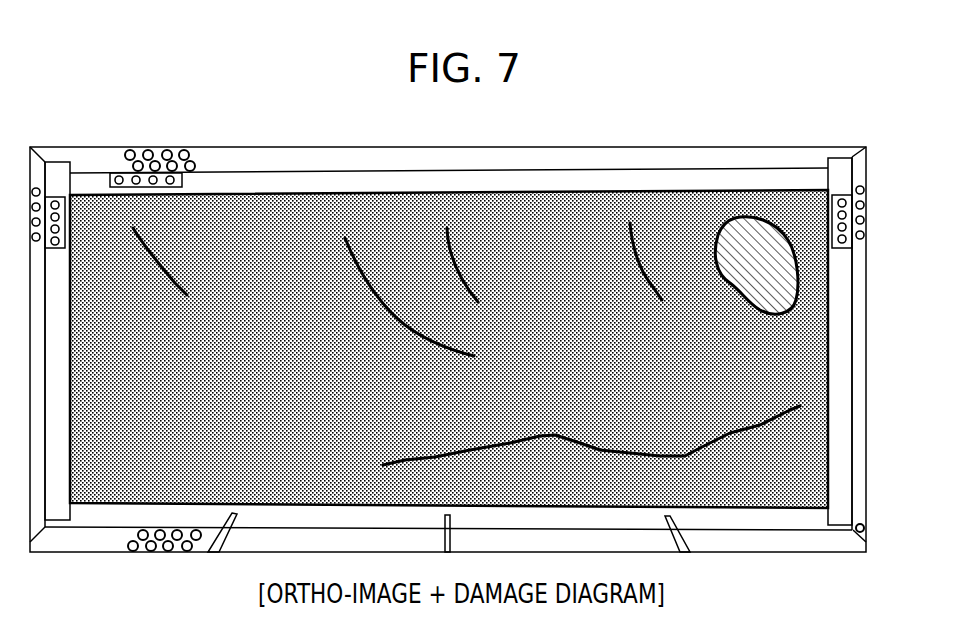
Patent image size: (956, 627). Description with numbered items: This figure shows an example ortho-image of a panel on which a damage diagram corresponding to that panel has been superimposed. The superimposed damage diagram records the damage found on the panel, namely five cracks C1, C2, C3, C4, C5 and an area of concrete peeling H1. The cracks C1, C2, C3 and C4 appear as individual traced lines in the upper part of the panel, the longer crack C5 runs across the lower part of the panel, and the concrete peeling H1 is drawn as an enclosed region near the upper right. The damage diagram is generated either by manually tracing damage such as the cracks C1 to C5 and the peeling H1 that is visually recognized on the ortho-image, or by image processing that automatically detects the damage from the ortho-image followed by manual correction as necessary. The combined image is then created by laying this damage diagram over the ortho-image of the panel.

The crack C1 is at (154, 261).
The crack C2 is at (409, 297).
The crack C3 is at (448, 265).
The crack C4 is at (632, 261).
The crack C5 is at (573, 443).
The concrete peeling H1 is at (756, 265).